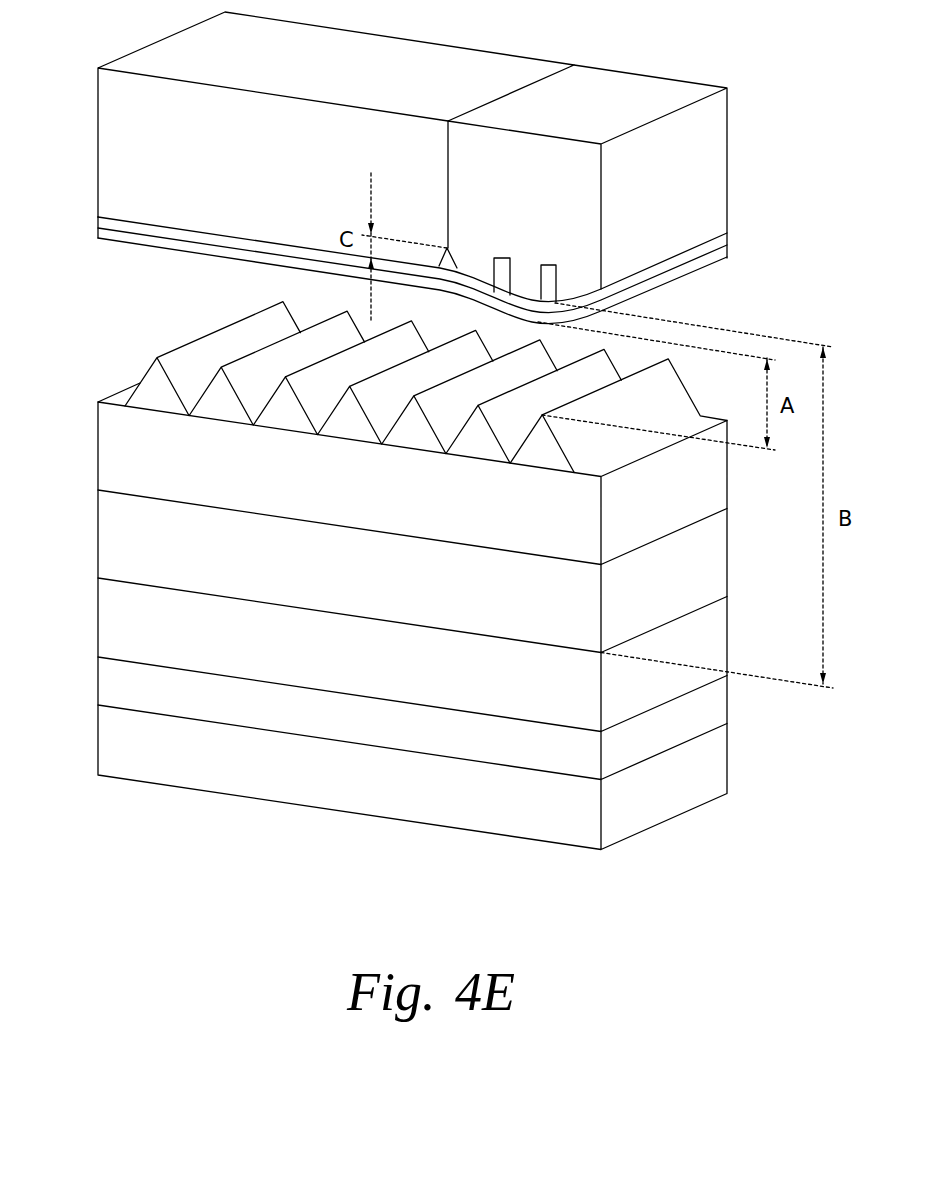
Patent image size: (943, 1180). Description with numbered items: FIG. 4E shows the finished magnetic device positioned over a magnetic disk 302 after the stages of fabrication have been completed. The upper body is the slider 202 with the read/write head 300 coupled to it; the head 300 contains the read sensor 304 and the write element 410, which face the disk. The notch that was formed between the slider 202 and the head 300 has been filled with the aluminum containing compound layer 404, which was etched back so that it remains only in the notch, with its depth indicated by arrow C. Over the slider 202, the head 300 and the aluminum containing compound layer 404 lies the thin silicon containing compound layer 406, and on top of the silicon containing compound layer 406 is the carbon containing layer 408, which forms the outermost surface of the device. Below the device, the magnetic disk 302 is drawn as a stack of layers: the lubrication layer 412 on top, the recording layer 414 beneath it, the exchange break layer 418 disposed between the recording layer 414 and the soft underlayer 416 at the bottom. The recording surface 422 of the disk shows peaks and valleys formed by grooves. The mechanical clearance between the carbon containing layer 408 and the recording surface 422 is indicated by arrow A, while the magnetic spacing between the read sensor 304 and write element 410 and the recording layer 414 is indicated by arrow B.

The slider 202 is at (302, 151).
The read/write head 300 is at (553, 186).
The silicon containing compound layer 406 is at (98, 223).
The carbon containing layer 408 is at (98, 238).
The aluminum containing compound layer 404 is at (459, 262).
The read sensor 304 is at (503, 258).
The write element 410 is at (550, 265).
The recording surface 422 is at (218, 343).
The lubrication layer 412 is at (98, 449).
The magnetic disk 302 is at (98, 533).
The recording layer 414 is at (98, 619).
The exchange break layer 418 is at (98, 679).
The soft underlayer 416 is at (98, 744).